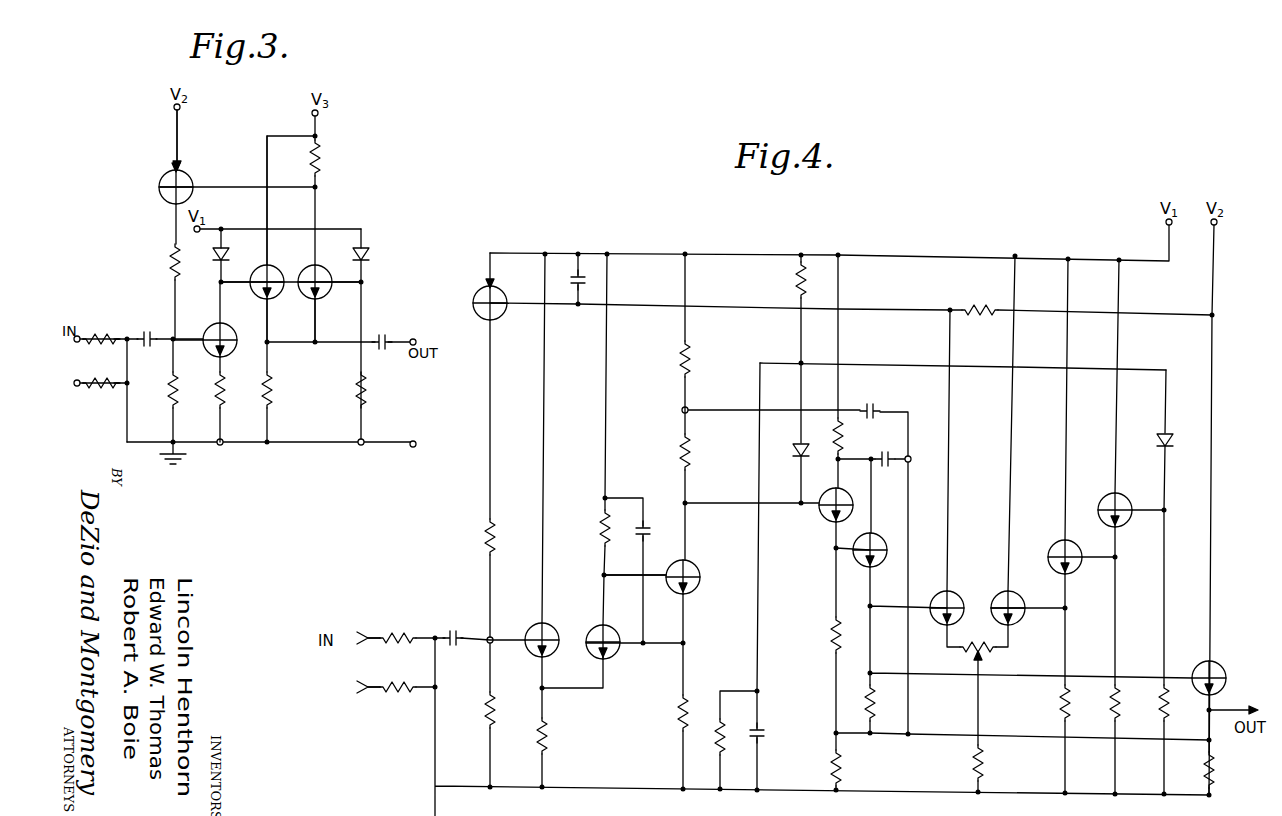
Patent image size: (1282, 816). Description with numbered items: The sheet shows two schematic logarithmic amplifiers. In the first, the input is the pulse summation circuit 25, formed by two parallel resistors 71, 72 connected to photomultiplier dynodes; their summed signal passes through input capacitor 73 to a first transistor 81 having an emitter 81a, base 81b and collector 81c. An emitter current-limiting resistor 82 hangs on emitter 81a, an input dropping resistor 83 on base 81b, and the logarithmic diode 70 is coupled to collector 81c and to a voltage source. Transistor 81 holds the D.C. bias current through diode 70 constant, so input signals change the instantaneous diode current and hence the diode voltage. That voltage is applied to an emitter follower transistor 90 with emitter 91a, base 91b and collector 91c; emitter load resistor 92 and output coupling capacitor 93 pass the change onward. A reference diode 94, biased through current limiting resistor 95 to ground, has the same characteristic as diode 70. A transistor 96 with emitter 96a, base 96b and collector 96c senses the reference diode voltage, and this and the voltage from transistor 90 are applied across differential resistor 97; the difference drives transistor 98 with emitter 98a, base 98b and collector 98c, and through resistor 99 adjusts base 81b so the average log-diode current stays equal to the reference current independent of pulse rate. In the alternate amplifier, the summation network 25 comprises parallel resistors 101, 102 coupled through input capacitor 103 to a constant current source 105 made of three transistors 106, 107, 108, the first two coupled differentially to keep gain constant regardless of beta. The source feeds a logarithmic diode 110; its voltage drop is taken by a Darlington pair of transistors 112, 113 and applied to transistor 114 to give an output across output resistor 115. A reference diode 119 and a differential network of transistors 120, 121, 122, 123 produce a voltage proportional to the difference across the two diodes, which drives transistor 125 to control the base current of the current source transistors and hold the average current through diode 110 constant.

In FIG. 3, the pulse summation circuit 25 is at (103, 321).
In FIG. 4, the pulse summation circuit 25 is at (417, 620).
In FIG. 3, the logarithmic diode 70 is at (229, 257).
In FIG. 3, the parallel resistor 71 is at (106, 348).
In FIG. 3, the parallel resistor 72 is at (108, 392).
In FIG. 3, the input capacitor 73 is at (145, 331).
In FIG. 3, the first transistor 81 is at (233, 332).
In FIG. 3, the emitter 81a is at (225, 351).
In FIG. 3, the base 81b is at (203, 339).
In FIG. 3, the collector 81c is at (217, 322).
In FIG. 3, the emitter current-limiting resistor 82 is at (216, 392).
In FIG. 3, the input dropping resistor 83 is at (169, 392).
In FIG. 3, the emitter follower transistor 90 is at (283, 290).
In FIG. 3, the emitter 91a is at (274, 303).
In FIG. 3, the base 91b is at (258, 286).
In FIG. 3, the collector 91c is at (268, 268).
In FIG. 3, the emitter load resistor 92 is at (274, 393).
In FIG. 3, the output coupling capacitor 93 is at (381, 336).
In FIG. 3, the reference diode 94 is at (371, 254).
In FIG. 3, the current limiting resistor 95 is at (368, 392).
In FIG. 3, the transistor 96 is at (326, 282).
In FIG. 3, the emitter 96a is at (316, 304).
In FIG. 3, the base 96b is at (327, 287).
In FIG. 3, the collector 96c is at (317, 270).
In FIG. 3, the differential resistor 97 is at (322, 166).
In FIG. 3, the transistor 98 is at (164, 177).
In FIG. 3, the emitter 98a is at (179, 130).
In FIG. 3, the base 98b is at (216, 186).
In FIG. 3, the collector 98c is at (172, 212).
In FIG. 3, the resistor 99 is at (168, 262).
In FIG. 4, the parallel connected resistor 101 is at (403, 647).
In FIG. 4, the parallel connected resistor 102 is at (406, 698).
In FIG. 4, the input capacitor 103 is at (456, 630).
In FIG. 4, the constant current source 105 is at (638, 672).
In FIG. 4, the transistor 106 is at (555, 625).
In FIG. 4, the transistor 107 is at (596, 656).
In FIG. 4, the transistor 108 is at (711, 551).
In FIG. 4, the diode 110 is at (793, 454).
In FIG. 4, the transistor 112 is at (822, 514).
In FIG. 4, the transistor 113 is at (859, 562).
In FIG. 4, the transistor 114 is at (1199, 666).
In FIG. 4, the output resistor 115 is at (1200, 769).
In FIG. 4, the reference diode 119 is at (1173, 447).
In FIG. 4, the transistor 120 is at (955, 595).
In FIG. 4, the transistor 121 is at (1022, 624).
In FIG. 4, the transistor 122 is at (1050, 550).
In FIG. 4, the transistor 123 is at (1105, 495).
In FIG. 4, the transistor 125 is at (504, 313).